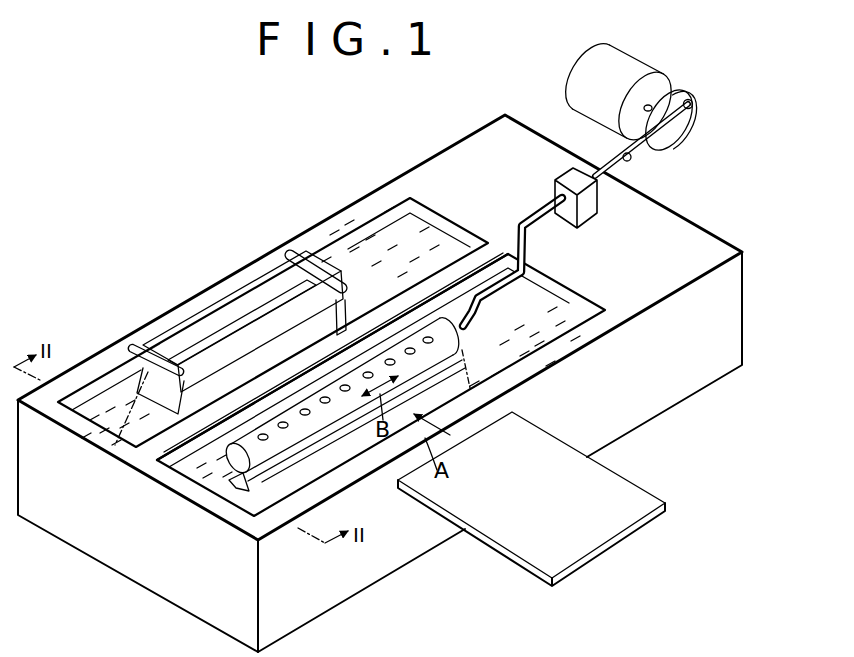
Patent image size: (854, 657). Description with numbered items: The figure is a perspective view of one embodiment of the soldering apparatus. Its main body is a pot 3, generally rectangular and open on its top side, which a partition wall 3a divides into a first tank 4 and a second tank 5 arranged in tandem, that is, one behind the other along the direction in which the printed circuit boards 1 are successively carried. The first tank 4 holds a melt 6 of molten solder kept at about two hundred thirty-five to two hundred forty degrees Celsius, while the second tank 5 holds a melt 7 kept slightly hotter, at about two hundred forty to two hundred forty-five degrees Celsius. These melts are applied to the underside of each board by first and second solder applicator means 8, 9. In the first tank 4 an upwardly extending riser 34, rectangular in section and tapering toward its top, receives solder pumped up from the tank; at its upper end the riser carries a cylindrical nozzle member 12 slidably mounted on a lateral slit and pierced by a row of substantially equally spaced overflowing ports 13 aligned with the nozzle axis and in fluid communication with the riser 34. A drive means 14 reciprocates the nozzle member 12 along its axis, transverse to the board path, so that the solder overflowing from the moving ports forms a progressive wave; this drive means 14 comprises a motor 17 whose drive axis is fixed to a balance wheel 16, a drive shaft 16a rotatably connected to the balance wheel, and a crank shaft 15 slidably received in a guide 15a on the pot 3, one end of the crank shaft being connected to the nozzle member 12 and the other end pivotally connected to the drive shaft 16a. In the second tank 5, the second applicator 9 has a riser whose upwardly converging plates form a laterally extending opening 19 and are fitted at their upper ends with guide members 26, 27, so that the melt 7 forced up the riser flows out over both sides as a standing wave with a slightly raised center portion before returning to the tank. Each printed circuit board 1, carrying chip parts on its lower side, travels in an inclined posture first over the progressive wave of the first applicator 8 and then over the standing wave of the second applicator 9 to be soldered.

The printed circuit board 1 is at (590, 527).
The pot 3 is at (718, 330).
The partition wall 3a is at (183, 447).
The first tank 4 is at (573, 291).
The second tank 5 is at (368, 228).
The melt 6 is at (563, 324).
The melt 7 is at (352, 244).
The first solder applicator means 8 is at (475, 358).
The second solder applicator means 9 is at (145, 415).
The nozzle member 12 is at (345, 442).
The overflowing ports 13 is at (306, 416).
The drive means 14 is at (645, 165).
The crank shaft 15 is at (527, 220).
The guide 15a is at (556, 178).
The balance wheel 16 is at (680, 137).
The drive shaft 16a is at (690, 116).
The motor 17 is at (630, 73).
The opening 19 is at (190, 357).
The guide member 26 is at (263, 330).
The guide member 27 is at (188, 355).
The riser 34 is at (240, 488).